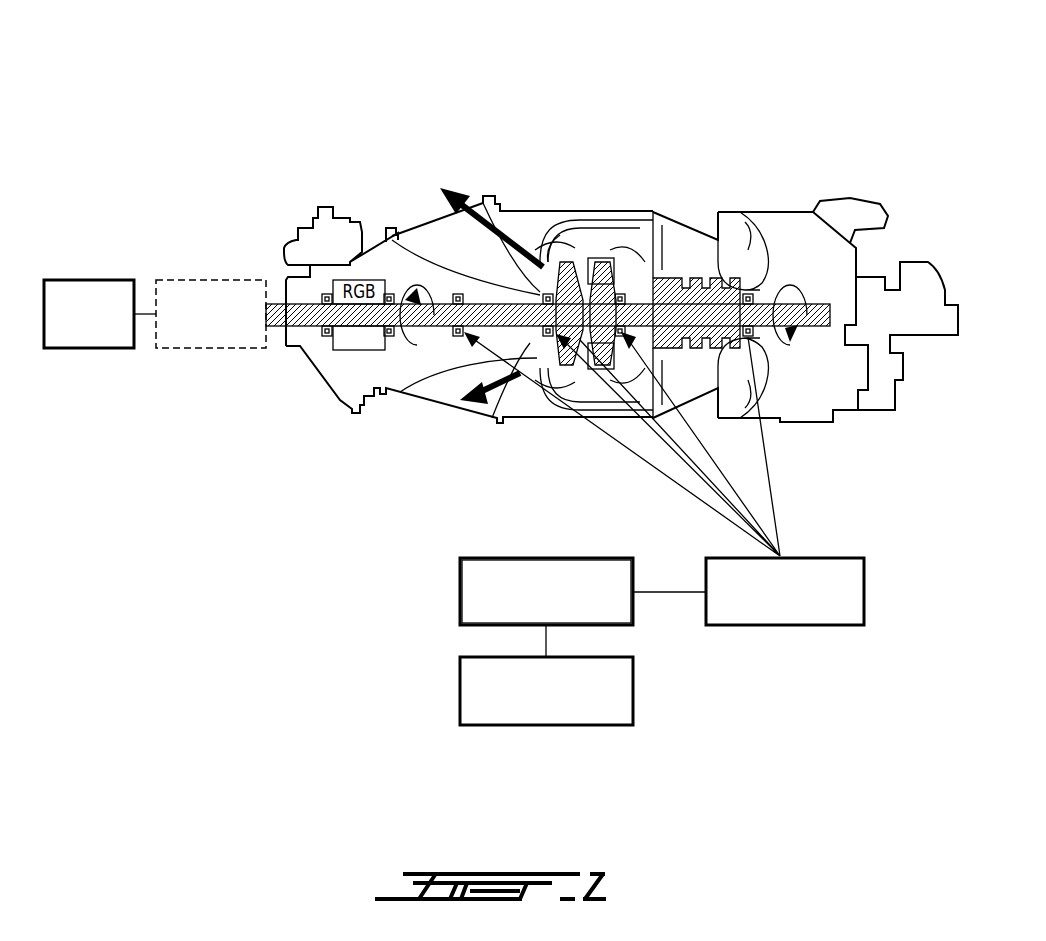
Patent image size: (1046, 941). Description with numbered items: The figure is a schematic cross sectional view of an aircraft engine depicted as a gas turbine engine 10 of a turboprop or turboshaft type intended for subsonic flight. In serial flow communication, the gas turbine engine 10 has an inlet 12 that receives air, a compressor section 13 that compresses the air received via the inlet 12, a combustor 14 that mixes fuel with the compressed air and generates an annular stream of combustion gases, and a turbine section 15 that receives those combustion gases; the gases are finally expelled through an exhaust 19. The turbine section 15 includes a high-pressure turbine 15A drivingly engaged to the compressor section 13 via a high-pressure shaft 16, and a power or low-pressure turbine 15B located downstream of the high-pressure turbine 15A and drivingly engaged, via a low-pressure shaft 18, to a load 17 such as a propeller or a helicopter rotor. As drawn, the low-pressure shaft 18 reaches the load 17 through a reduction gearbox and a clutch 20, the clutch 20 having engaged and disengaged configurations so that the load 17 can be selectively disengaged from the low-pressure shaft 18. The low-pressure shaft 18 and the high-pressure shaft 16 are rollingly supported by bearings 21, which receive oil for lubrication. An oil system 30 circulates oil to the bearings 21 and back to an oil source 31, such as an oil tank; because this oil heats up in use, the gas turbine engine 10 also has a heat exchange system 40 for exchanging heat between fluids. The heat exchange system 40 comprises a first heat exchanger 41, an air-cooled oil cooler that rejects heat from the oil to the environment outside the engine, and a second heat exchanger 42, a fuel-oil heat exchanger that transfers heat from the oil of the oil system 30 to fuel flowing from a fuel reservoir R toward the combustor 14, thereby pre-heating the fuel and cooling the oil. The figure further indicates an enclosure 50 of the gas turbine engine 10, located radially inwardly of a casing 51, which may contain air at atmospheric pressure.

The gas turbine engine 10 is at (568, 122).
The inlet 12 is at (762, 222).
The compressor section 13 is at (692, 235).
The combustor 14 is at (597, 400).
The turbine section 15 is at (562, 246).
The high-pressure turbine 15A is at (624, 345).
The low-pressure turbine 15B is at (560, 382).
The high-pressure shaft 16 is at (601, 258).
The load 17 is at (88, 280).
The low-pressure shaft 18 is at (440, 392).
The exhaust 19 is at (412, 224).
The clutch 20 is at (210, 280).
The bearings 21 is at (546, 294).
The oil system 30 is at (681, 666).
The oil source 31 is at (864, 592).
The heat exchange system 40 is at (430, 556).
The first heat exchanger 41 is at (460, 588).
The second heat exchanger 42 is at (546, 591).
The enclosure 50 is at (686, 262).
The casing 51 is at (800, 212).
The fuel reservoir R is at (545, 725).